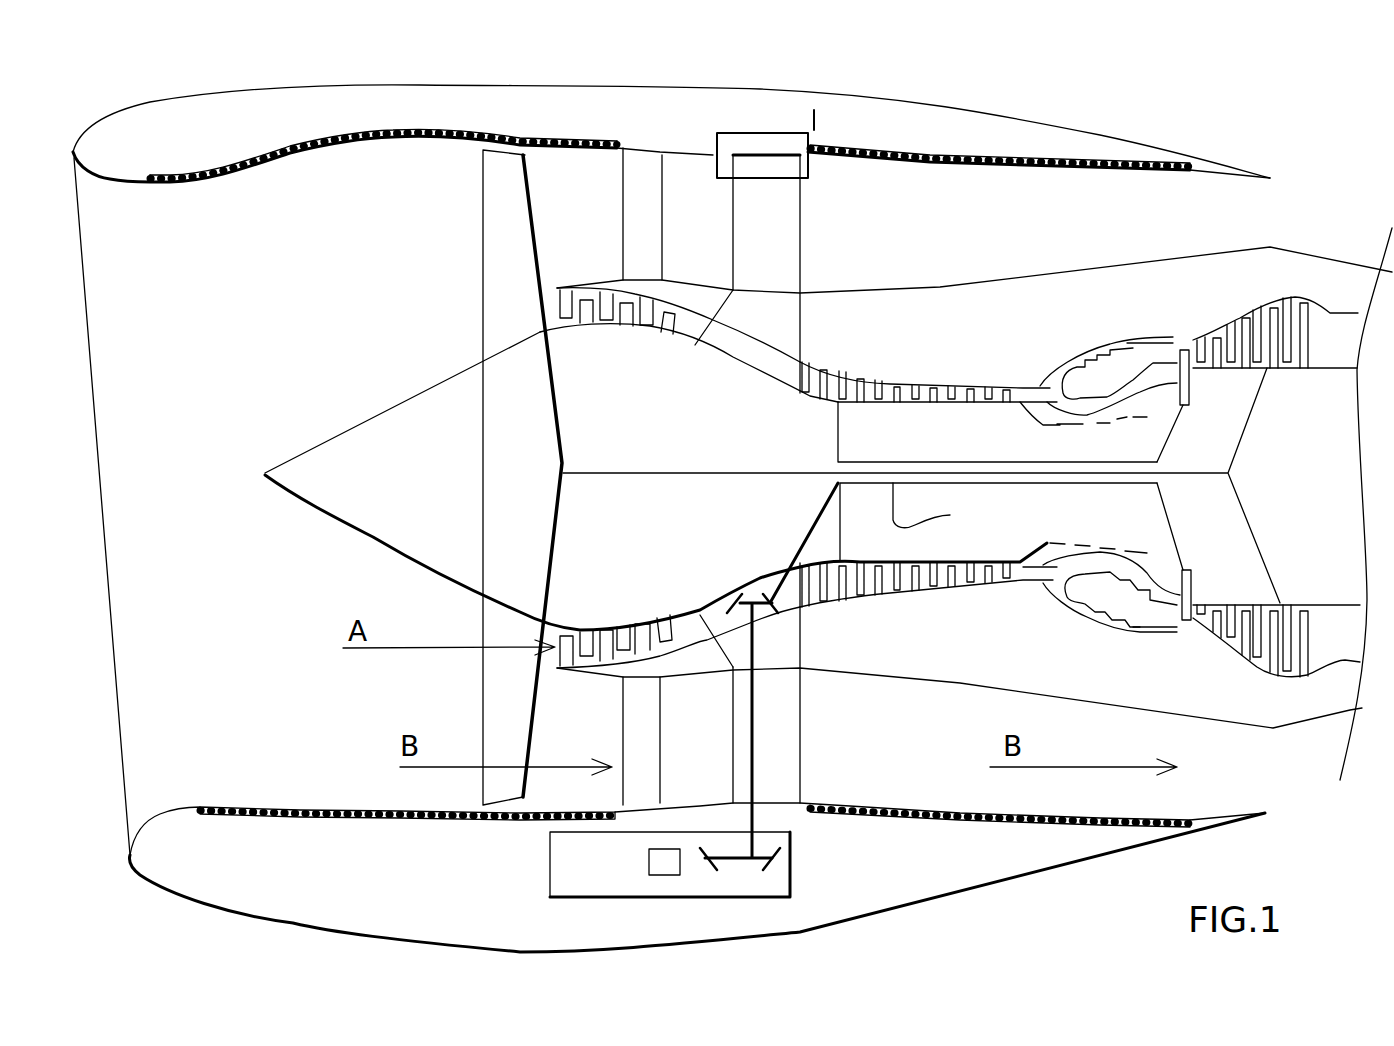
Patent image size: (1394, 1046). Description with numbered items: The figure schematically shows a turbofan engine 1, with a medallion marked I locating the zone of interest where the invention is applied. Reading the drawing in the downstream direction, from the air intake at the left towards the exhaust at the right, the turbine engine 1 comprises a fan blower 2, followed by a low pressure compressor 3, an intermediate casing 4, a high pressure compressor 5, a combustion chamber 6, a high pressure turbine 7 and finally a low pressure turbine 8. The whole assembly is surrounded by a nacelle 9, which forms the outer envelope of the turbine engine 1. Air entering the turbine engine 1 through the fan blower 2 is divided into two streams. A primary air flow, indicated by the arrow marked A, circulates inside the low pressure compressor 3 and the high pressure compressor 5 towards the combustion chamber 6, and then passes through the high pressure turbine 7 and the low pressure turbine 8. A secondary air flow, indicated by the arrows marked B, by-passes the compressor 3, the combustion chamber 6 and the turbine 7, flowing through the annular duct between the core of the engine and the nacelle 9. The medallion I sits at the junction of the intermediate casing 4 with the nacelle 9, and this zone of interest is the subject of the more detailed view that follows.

The turbofan engine 1 is at (1290, 120).
The fan blower 2 is at (483, 222).
The low pressure compressor 3 is at (593, 293).
The intermediate casing 4 is at (733, 203).
The high pressure compressor 5 is at (896, 383).
The combustion chamber 6 is at (1123, 342).
The high pressure turbine 7 is at (1182, 345).
The low pressure turbine 8 is at (1259, 320).
The nacelle 9 is at (455, 108).